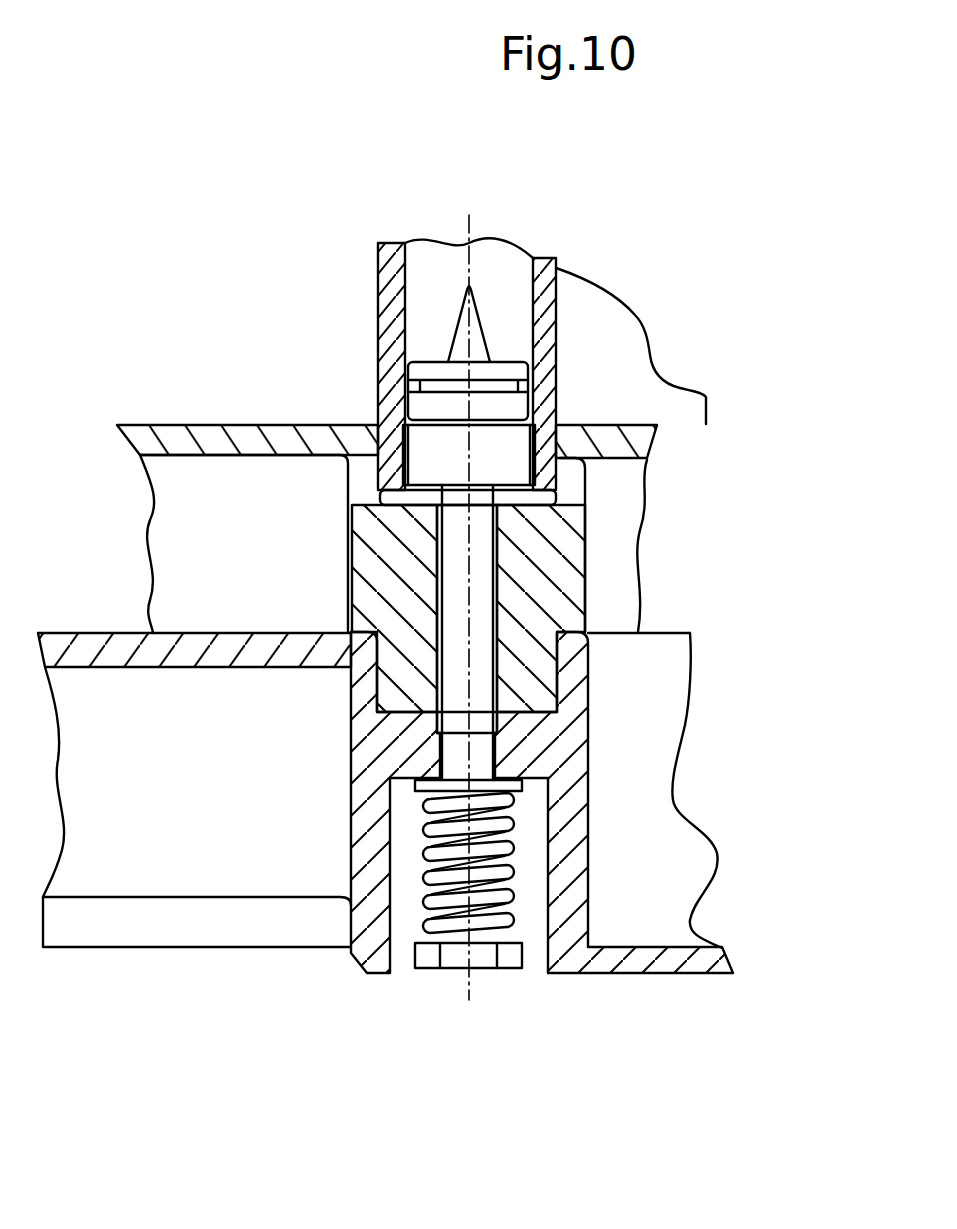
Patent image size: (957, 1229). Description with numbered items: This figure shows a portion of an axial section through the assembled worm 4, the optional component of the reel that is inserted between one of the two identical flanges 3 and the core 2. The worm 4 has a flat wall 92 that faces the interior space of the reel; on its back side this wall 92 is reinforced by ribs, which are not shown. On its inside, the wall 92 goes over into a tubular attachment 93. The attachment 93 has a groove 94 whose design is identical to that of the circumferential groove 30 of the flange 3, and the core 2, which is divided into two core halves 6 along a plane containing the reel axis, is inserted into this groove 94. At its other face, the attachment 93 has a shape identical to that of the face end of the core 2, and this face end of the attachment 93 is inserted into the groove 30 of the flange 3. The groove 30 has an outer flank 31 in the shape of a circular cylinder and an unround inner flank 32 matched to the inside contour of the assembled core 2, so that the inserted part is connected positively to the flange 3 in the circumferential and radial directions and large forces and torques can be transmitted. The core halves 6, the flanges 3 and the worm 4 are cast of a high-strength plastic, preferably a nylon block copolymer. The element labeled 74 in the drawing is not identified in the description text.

The core 2 is at (370, 265).
The flange 3 is at (243, 995).
The worm 4 is at (198, 402).
The core half 6 is at (387, 302).
The circumferential groove 30 is at (398, 702).
The outer flank 31 is at (397, 670).
The inner flank 32 is at (543, 670).
The spring assembly 74 is at (493, 1003).
The flat wall 92 is at (242, 437).
The tubular attachment 93 is at (543, 552).
The groove 94 is at (422, 476).